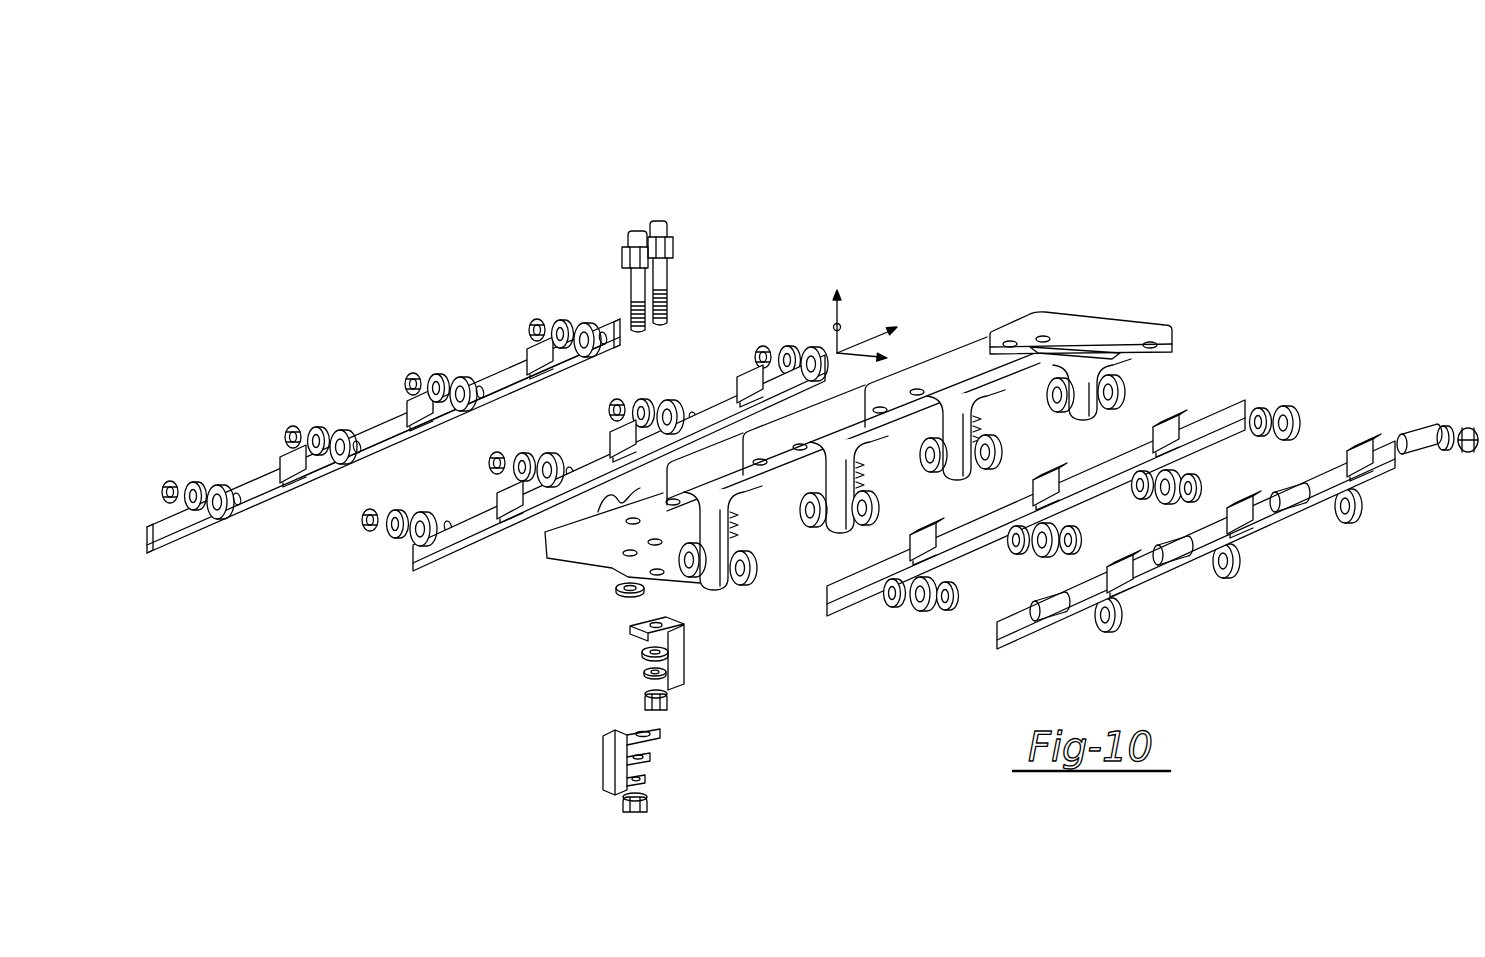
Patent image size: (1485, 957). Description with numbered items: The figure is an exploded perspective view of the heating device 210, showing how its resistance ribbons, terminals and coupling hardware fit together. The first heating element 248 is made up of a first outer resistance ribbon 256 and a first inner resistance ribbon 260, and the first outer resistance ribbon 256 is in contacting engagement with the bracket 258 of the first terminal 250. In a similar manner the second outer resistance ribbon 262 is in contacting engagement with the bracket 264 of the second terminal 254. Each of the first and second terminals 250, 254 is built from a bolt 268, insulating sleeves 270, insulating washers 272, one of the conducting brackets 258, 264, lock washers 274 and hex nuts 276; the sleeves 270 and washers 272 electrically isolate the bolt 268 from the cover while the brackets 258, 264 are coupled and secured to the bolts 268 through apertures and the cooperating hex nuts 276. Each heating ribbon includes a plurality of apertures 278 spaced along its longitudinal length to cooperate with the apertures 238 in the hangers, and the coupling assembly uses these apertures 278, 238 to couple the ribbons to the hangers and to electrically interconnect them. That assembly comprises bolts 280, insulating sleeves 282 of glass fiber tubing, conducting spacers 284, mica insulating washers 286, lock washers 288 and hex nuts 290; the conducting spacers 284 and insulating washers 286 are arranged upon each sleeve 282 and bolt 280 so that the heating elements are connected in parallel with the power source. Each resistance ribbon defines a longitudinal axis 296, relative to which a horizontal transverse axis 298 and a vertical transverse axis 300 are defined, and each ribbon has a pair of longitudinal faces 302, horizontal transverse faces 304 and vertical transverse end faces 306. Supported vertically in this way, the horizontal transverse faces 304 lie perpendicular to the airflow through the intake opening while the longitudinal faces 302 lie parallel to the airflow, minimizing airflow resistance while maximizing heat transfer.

The heating device 210 is at (1024, 222).
The apertures in hangers 238 is at (937, 467).
The first heating element 248 is at (293, 606).
The first terminal 250 is at (631, 216).
The second positive terminal 254 is at (664, 215).
The first outer resistance ribbon 256 is at (262, 497).
The bracket 258 is at (612, 762).
The first inner resistance ribbon 260 is at (470, 522).
The second outer resistance ribbon 262 is at (1012, 643).
The bracket 264 is at (686, 660).
The bolt 268 is at (665, 236).
The insulating sleeves 270 is at (620, 484).
The insulating washers 272 is at (612, 590).
The lock washers 274 is at (641, 674).
The hex nuts 276 is at (668, 702).
The apertures 278 is at (482, 386).
The bolts 280 is at (1210, 572).
The insulating sleeves 282 is at (1186, 570).
The conducting spacers 284 is at (696, 586).
The insulating washers 286 is at (219, 494).
The lock washers 288 is at (195, 488).
The hex nuts 290 is at (166, 486).
The longitudinal axis 296 is at (862, 342).
The horizontal transverse axis 298 is at (862, 352).
The vertical transverse axis 300 is at (830, 327).
The longitudinal faces 302 is at (510, 382).
The horizontal transverse faces 304 is at (378, 420).
The vertical transverse end faces 306 is at (145, 548).